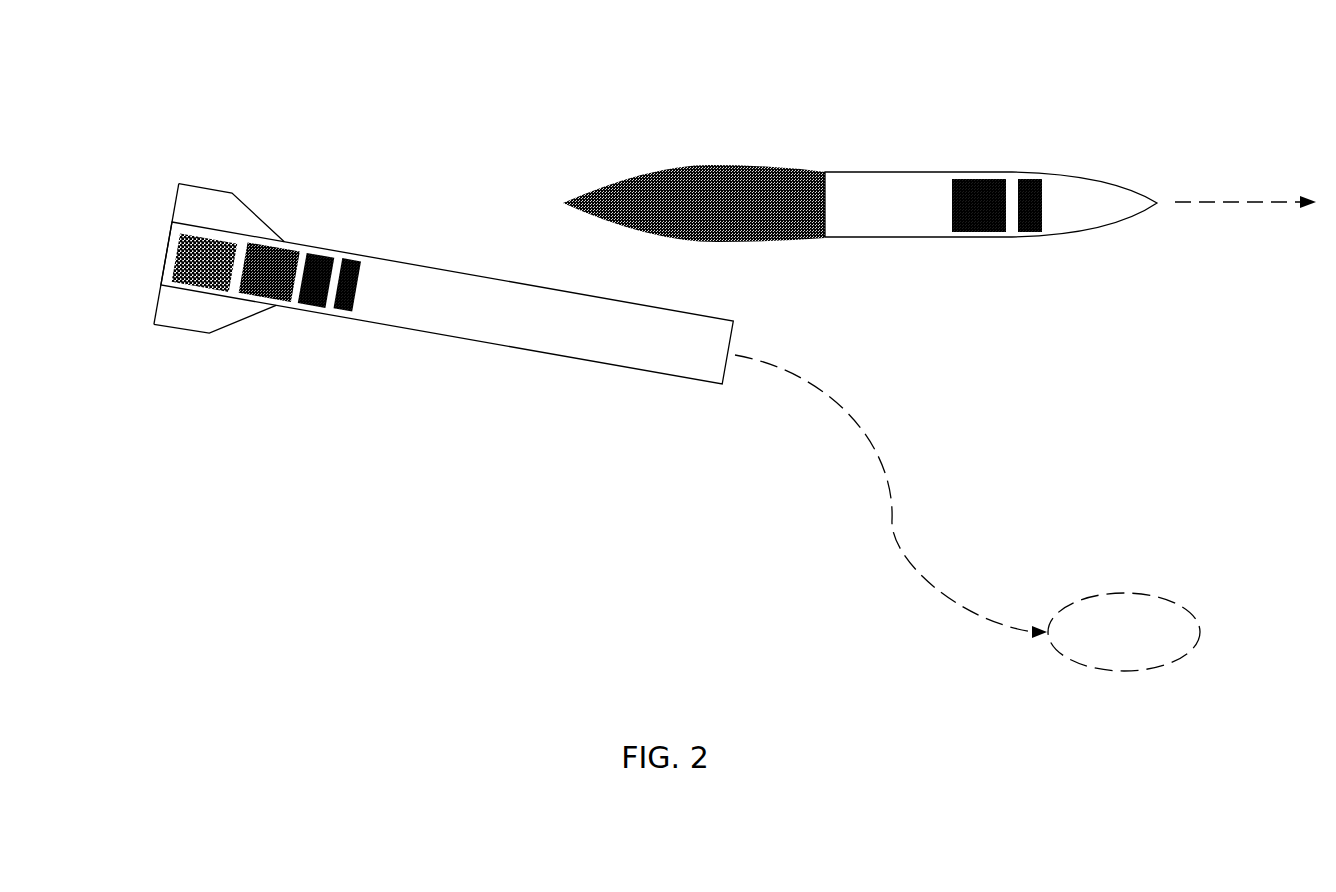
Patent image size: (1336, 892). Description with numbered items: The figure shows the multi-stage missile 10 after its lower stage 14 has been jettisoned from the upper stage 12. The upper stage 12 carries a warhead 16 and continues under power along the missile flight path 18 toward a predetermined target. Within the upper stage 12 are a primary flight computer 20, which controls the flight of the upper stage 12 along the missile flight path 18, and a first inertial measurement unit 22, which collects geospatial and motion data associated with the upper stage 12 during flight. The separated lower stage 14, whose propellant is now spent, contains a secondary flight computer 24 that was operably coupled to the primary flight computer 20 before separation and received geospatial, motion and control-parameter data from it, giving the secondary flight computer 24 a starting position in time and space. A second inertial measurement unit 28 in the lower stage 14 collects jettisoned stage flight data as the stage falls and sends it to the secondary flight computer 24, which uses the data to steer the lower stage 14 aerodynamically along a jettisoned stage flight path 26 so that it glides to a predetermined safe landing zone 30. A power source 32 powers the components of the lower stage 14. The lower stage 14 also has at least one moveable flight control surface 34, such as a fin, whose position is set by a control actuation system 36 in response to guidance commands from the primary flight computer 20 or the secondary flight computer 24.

The multi-stage missile 10 is at (262, 601).
The upper stage 12 is at (888, 219).
The lower stage 14 is at (543, 322).
The warhead 16 is at (1132, 205).
The missile flight path 18 is at (1207, 198).
The primary flight computer 20 is at (992, 192).
The first inertial measurement unit 22 is at (1033, 192).
The secondary flight computer 24 is at (310, 308).
The jettisoned stage flight path 26 is at (890, 477).
The second inertial measurement unit 28 is at (348, 317).
The predetermined safe landing zone 30 is at (1070, 659).
The power source 32 is at (272, 260).
The moveable flight control surface 34 is at (205, 202).
The control actuation system 36 is at (220, 263).